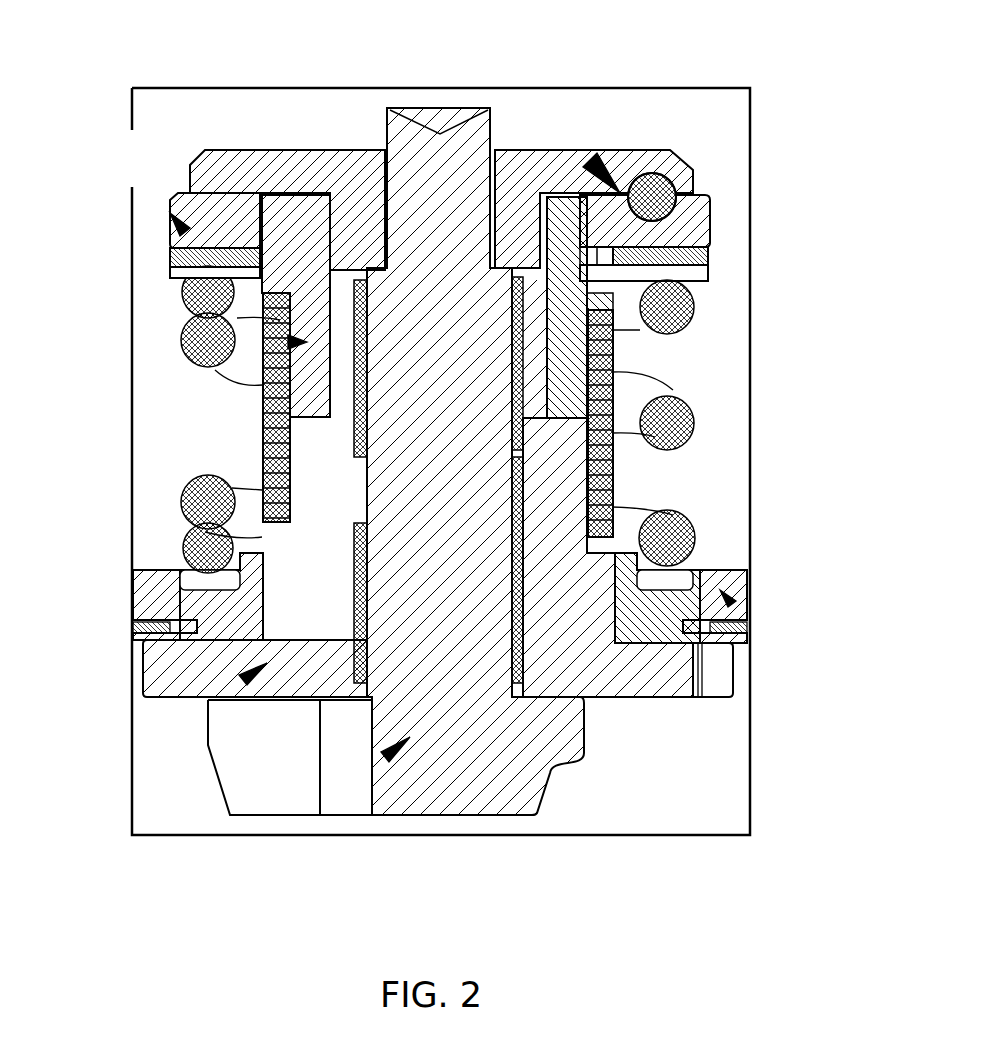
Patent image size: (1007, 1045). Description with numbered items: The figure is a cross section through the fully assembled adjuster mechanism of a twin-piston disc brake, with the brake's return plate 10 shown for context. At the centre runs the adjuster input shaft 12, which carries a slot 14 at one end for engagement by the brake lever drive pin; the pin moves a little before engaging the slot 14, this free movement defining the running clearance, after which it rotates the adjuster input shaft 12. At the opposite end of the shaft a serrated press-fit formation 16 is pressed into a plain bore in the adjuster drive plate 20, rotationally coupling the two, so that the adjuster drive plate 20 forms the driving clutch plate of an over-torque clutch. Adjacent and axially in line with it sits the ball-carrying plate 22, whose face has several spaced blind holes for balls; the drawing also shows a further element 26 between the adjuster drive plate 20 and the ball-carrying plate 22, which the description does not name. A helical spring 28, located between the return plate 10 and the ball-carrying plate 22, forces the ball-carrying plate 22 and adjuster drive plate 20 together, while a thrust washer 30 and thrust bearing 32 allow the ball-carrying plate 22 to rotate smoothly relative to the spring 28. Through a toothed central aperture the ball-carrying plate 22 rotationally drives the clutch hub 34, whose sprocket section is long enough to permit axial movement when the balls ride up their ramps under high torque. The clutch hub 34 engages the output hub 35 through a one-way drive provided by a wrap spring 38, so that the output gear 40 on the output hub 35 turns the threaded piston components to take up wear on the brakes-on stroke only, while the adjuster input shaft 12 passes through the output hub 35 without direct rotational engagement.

The return plate 10 is at (747, 631).
The adjuster input shaft 12 is at (402, 482).
The slot 14 is at (263, 785).
The serrated press-fit formation 16 is at (357, 175).
The adjuster drive plate 20 is at (676, 142).
The ball-carrying plate 22 is at (690, 228).
The O-ring 26 is at (664, 191).
The helical spring 28 is at (714, 422).
The thrust washer 30 is at (720, 273).
The thrust bearing 32 is at (720, 253).
The clutch hub 34 is at (581, 329).
The output hub 35 is at (568, 522).
The wrap spring 38 is at (627, 481).
The output gear 40 is at (734, 686).